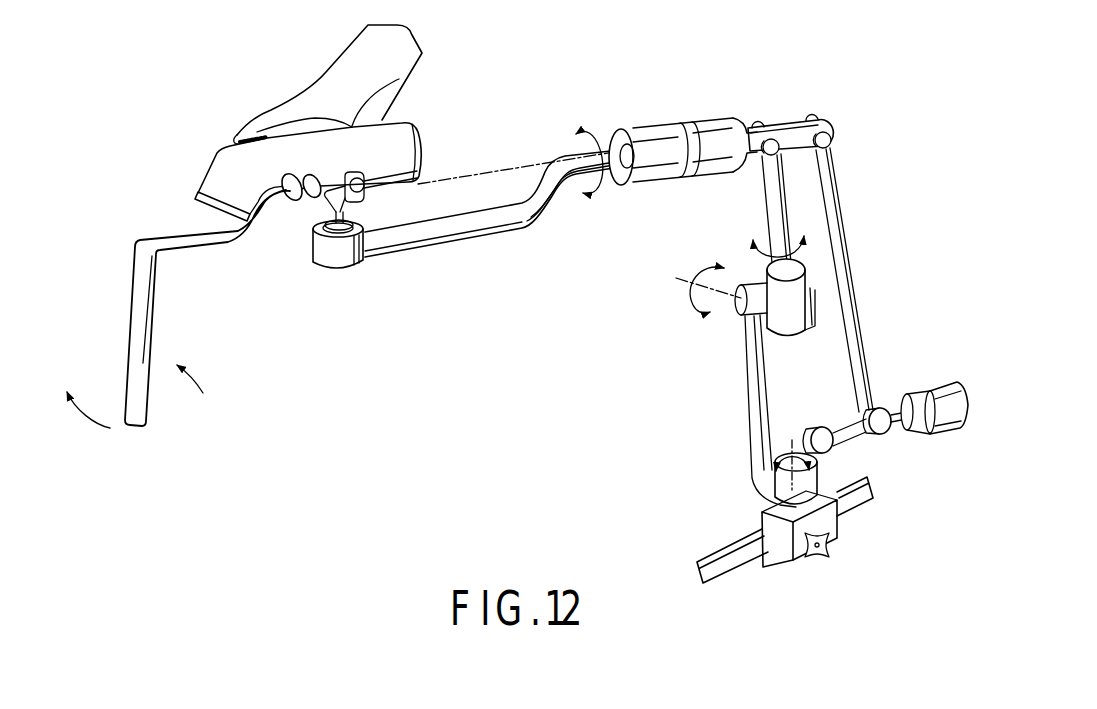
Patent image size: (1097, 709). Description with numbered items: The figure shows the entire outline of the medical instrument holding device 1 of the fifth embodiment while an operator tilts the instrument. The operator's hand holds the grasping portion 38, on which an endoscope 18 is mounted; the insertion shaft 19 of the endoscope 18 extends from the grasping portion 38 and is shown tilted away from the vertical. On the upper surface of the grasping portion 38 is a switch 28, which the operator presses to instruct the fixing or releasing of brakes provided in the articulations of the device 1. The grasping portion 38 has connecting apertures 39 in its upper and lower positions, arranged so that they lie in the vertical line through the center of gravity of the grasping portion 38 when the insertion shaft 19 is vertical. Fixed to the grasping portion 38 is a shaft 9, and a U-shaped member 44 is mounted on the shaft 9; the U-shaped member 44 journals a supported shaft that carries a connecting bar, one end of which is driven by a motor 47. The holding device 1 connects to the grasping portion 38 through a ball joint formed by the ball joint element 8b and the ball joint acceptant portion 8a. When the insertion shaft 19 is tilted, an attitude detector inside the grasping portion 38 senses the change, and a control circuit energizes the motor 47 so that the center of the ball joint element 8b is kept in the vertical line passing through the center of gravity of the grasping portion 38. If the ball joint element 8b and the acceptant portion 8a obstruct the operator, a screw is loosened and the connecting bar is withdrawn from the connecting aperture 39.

The stand / support apparatus 1 is at (587, 270).
The ball joint acceptant portion 8a is at (326, 250).
The ball joint element 8b is at (333, 260).
The shaft 9 is at (348, 214).
The endoscope 18 is at (202, 395).
The insertion shaft 19 is at (137, 308).
The switch 28 is at (217, 152).
The grasping portion 38 is at (397, 140).
The connecting aperture 39 is at (372, 117).
The U-shaped member 44 is at (318, 224).
The motor 47 is at (398, 174).